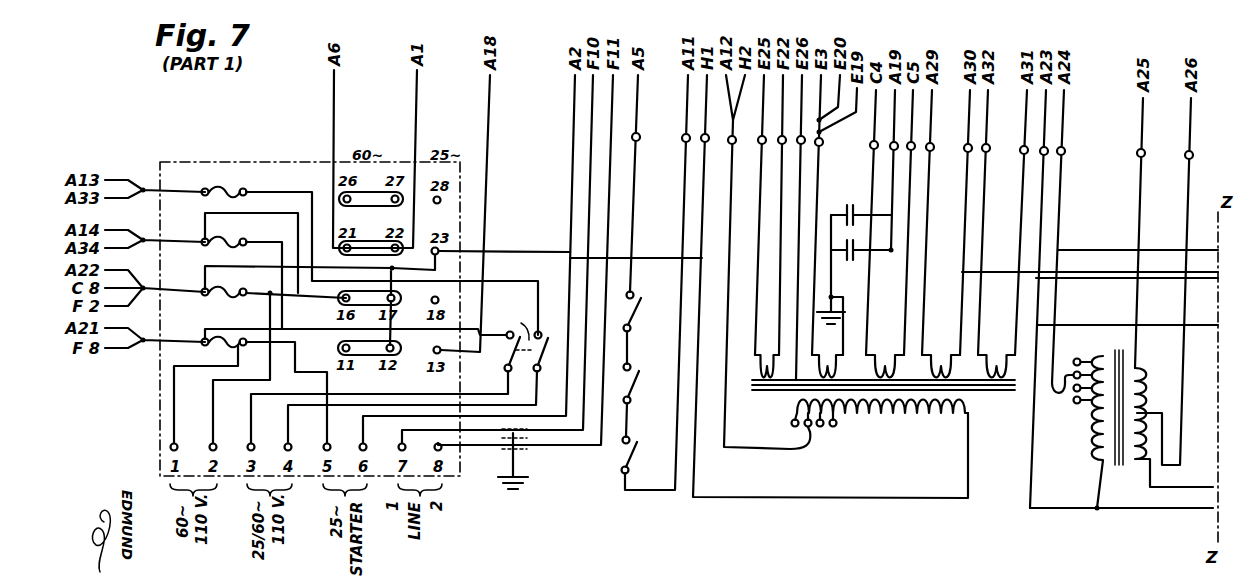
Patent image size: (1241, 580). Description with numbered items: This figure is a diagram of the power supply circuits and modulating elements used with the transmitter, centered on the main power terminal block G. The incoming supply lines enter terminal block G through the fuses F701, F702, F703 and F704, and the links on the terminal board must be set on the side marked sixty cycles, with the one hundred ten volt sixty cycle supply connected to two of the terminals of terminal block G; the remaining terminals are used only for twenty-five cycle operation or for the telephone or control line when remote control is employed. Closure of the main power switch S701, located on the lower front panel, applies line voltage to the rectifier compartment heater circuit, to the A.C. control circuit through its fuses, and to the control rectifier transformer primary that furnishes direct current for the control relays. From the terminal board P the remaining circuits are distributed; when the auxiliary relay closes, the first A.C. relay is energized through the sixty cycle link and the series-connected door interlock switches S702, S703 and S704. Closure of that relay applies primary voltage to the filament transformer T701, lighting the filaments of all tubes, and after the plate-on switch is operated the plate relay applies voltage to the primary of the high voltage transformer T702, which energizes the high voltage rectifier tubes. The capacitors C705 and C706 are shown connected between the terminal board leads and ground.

The fuse F701 is at (227, 335).
The fuse F702 is at (225, 285).
The fuse F703 is at (225, 235).
The fuse F704 is at (227, 183).
The main power switch S701 is at (517, 338).
The door interlock switch S702 is at (650, 206).
The door interlock switch S703 is at (649, 387).
The door interlock switch S704 is at (648, 459).
The capacitor C705 is at (861, 203).
The capacitor C706 is at (861, 259).
The filament transformer T701 is at (870, 413).
The high voltage transformer T702 is at (1092, 430).
The terminal strip P is at (921, 291).
The terminal block G is at (148, 433).